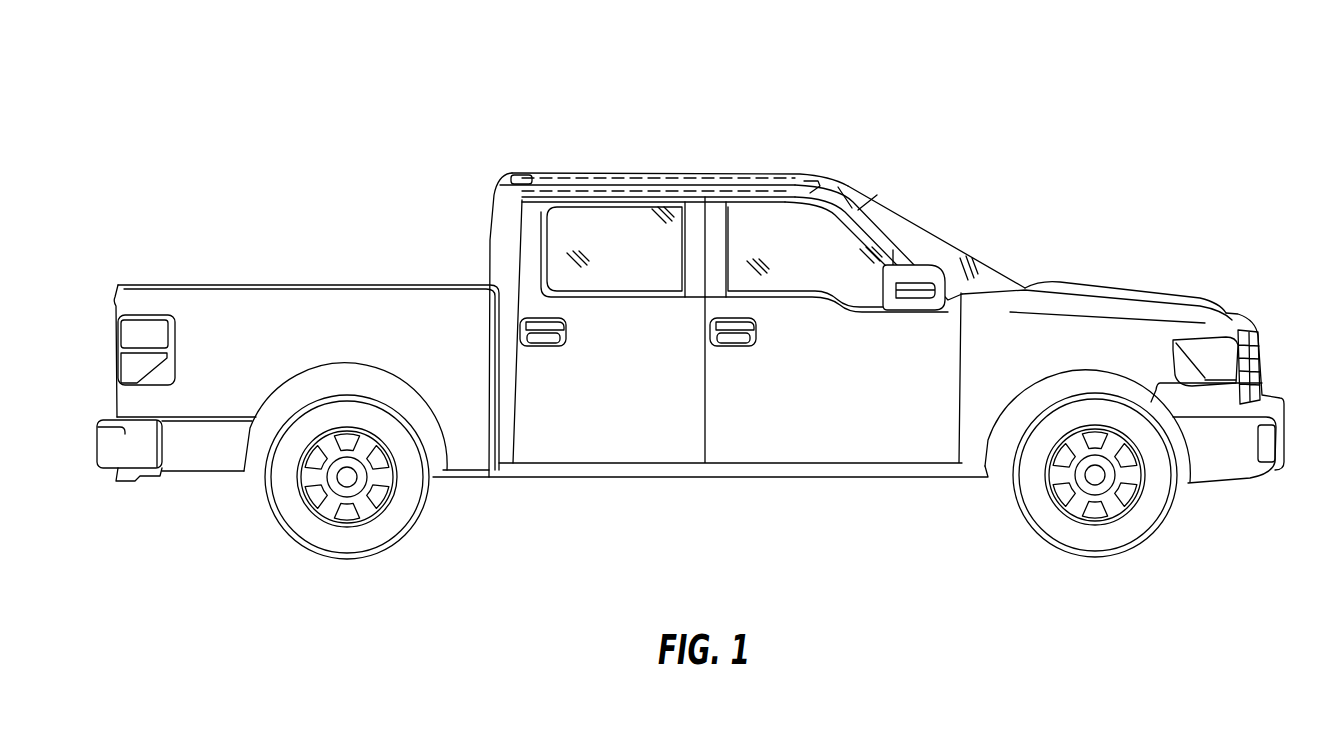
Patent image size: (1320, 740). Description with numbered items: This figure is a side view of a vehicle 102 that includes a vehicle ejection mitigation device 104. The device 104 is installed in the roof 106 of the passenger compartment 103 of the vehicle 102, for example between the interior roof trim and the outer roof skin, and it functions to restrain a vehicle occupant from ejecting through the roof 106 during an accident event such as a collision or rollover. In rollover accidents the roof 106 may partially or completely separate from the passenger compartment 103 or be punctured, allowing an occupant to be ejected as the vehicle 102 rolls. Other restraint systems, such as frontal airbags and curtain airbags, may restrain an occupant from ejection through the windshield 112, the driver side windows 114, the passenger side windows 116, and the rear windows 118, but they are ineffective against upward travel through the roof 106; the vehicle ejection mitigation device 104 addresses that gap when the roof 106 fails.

The vehicle 102 is at (984, 61).
The passenger compartment 103 is at (899, 171).
The vehicle ejection mitigation device 104 is at (791, 182).
The roof 106 is at (848, 183).
The windshield 112 is at (947, 250).
The driver side windows 114 is at (612, 230).
The passenger side windows 116 is at (635, 213).
The rear windows 118 is at (487, 230).